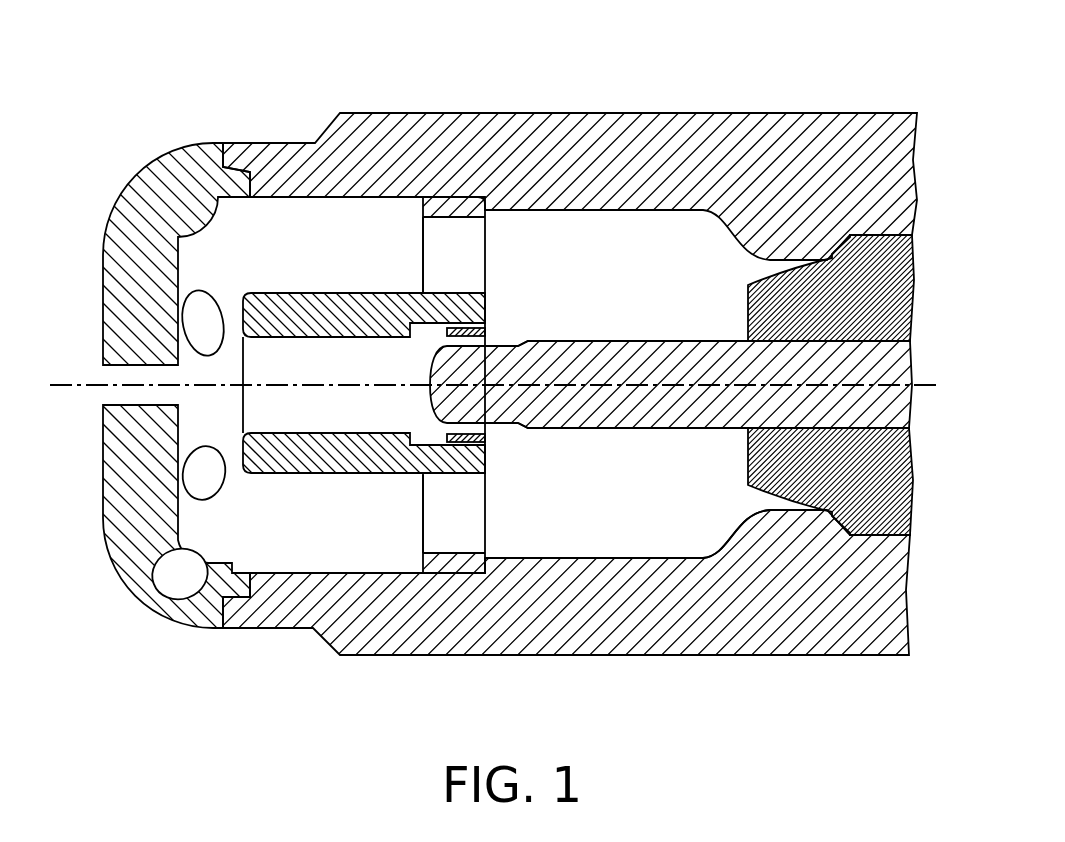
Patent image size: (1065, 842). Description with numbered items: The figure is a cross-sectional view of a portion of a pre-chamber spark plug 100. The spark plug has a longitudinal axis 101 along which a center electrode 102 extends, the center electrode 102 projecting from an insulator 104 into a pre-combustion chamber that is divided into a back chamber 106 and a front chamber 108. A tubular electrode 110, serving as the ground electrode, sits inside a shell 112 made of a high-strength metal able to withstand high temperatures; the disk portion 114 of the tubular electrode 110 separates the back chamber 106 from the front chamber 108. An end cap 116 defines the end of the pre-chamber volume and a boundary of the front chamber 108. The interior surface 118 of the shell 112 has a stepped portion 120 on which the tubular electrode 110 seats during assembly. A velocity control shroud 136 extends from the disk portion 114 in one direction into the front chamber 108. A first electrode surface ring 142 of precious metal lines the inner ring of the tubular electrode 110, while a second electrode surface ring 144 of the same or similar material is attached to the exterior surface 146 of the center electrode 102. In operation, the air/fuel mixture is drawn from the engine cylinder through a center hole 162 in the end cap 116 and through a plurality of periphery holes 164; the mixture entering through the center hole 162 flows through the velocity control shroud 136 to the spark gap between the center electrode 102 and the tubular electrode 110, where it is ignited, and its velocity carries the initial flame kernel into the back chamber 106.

The pre-chamber spark plug 100 is at (532, 421).
The longitudinal axis 101 is at (63, 383).
The center electrode 102 is at (667, 430).
The insulator 104 is at (800, 281).
The back chamber 106 is at (710, 527).
The front chamber 108 is at (385, 555).
The tubular electrode 110 is at (473, 238).
The shell 112 is at (420, 113).
The disk portion 114 is at (478, 521).
The end cap 116 is at (102, 243).
The interior surface 118 is at (352, 197).
The stepped portion 120 is at (471, 522).
The velocity control shroud 136 is at (320, 475).
The first electrode surface ring 142 is at (486, 337).
The second electrode surface ring 144 is at (498, 343).
The exterior surface 146 is at (487, 424).
The center hole 162 is at (93, 398).
The periphery holes 164 is at (175, 625).